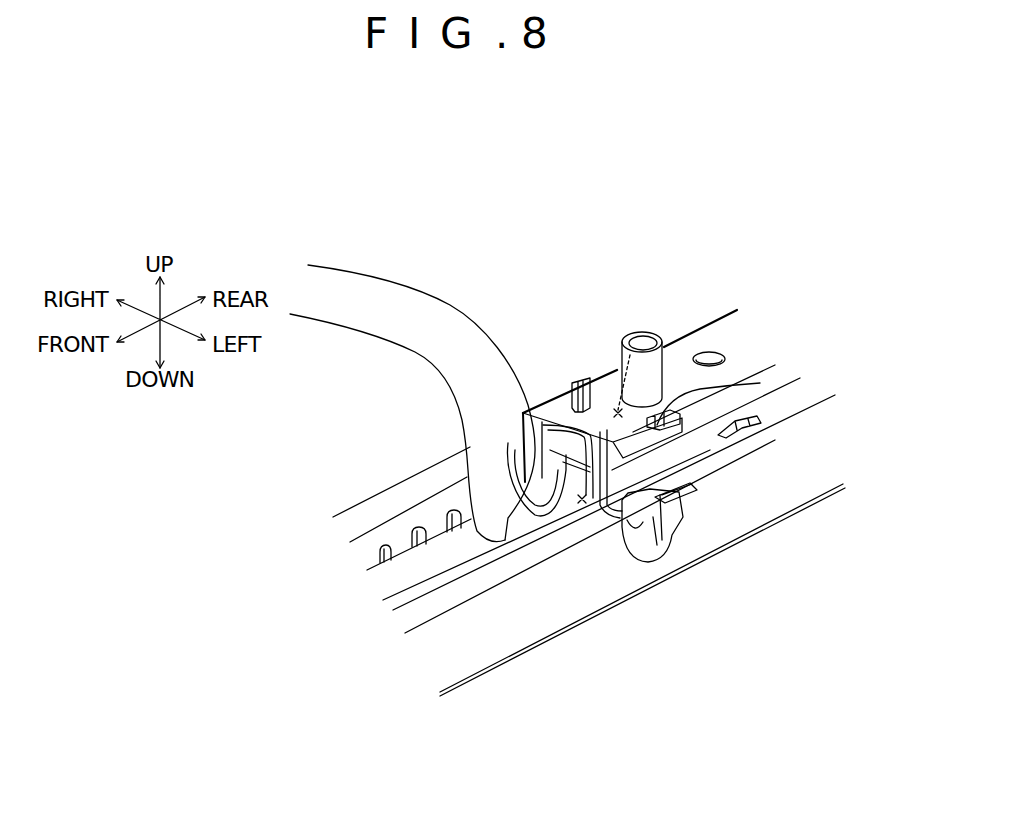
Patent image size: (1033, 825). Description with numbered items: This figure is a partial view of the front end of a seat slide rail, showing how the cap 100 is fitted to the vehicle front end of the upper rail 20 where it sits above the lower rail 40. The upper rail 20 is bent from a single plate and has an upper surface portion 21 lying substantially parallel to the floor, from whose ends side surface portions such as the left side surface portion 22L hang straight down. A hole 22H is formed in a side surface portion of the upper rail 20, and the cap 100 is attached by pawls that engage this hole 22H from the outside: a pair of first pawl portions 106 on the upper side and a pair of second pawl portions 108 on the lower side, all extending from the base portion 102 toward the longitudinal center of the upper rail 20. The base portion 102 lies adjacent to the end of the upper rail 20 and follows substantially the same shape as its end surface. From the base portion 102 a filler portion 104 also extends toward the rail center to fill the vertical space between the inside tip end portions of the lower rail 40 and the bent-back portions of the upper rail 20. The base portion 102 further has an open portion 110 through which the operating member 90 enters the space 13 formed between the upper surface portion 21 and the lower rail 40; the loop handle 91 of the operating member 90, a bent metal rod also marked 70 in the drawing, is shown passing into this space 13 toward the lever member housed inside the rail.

The space 13 is at (647, 335).
The upper rail 20 is at (600, 446).
The upper surface portion 21 is at (716, 343).
The hole 22H is at (596, 382).
The left side surface portion 22L is at (705, 437).
The lower rail 40 is at (482, 648).
The pipe 70 is at (378, 303).
The operating member 90 is at (412, 382).
The loop handle 91 is at (412, 382).
The cap 100 is at (641, 581).
The base portion 102 is at (556, 400).
The filler portion 104 is at (680, 534).
The first pawl portions 106 is at (600, 380).
The second pawl portions 108 is at (690, 499).
The open portion 110 is at (582, 504).